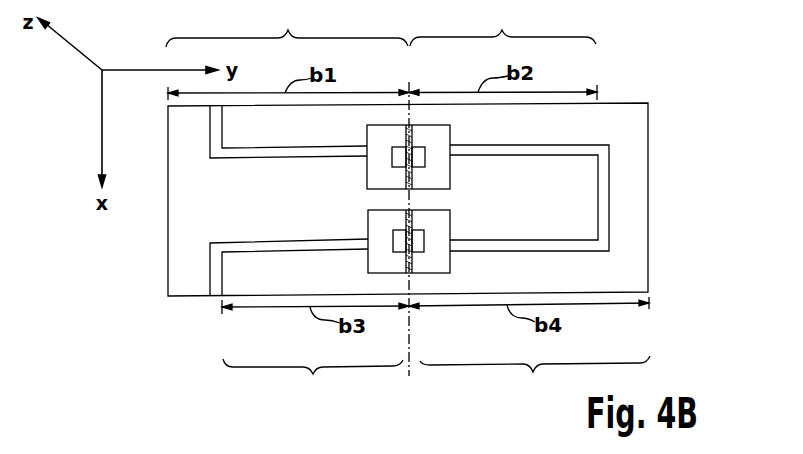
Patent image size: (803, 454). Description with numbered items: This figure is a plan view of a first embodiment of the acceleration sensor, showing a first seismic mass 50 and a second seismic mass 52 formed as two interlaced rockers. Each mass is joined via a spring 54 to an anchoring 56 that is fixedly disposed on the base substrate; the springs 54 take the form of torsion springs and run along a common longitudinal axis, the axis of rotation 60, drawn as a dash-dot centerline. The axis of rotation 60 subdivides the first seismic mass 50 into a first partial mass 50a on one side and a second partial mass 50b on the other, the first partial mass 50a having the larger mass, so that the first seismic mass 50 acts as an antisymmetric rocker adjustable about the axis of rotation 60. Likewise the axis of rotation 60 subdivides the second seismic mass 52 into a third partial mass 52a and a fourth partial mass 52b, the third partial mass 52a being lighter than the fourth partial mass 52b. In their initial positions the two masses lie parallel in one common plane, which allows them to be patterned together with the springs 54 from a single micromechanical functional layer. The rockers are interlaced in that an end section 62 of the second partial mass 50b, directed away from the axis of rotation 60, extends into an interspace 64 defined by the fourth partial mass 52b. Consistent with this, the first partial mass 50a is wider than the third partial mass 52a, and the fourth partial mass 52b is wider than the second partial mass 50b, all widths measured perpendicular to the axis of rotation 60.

The first seismic mass 50 is at (177, 258).
The first partial mass 50a is at (287, 26).
The second partial mass 50b is at (503, 24).
The second seismic mass 52 is at (468, 171).
The third partial mass 52a is at (313, 381).
The fourth partial mass 52b is at (535, 379).
The spring 54 is at (413, 133).
The anchoring 56 is at (404, 147).
The axis of rotation 60 is at (409, 374).
The end section 62 is at (604, 140).
The interspace 64 is at (603, 220).